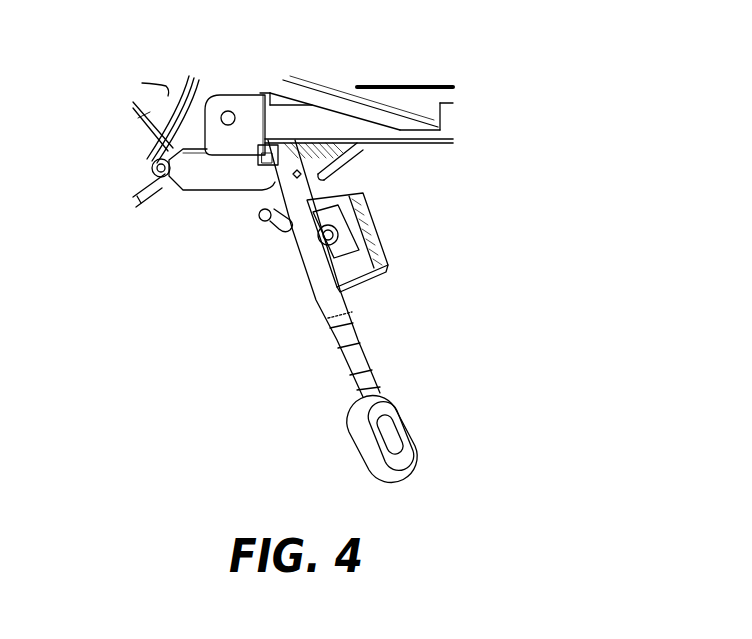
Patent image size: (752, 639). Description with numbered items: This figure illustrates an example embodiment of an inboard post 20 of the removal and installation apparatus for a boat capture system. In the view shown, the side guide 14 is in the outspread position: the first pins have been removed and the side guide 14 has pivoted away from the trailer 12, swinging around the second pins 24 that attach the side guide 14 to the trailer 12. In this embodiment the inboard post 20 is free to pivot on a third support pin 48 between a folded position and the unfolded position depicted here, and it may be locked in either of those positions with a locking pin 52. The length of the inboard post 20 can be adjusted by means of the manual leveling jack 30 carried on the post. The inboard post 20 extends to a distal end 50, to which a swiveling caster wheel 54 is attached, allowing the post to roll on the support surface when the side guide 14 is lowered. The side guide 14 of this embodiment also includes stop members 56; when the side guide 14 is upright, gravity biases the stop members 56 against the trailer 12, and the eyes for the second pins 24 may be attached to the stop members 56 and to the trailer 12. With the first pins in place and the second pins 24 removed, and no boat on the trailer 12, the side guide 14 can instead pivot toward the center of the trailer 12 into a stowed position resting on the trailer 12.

The trailer 12 is at (181, 97).
The side guide 14 is at (369, 85).
The inboard post 20 is at (246, 363).
The second pins 24 is at (153, 199).
The manual leveling jack 30 is at (266, 222).
The third support pin 48 is at (335, 150).
The distal end 50 is at (378, 388).
The locking pin 52 is at (295, 178).
The swiveling caster wheel 54 is at (352, 436).
The stop members 56 is at (195, 193).